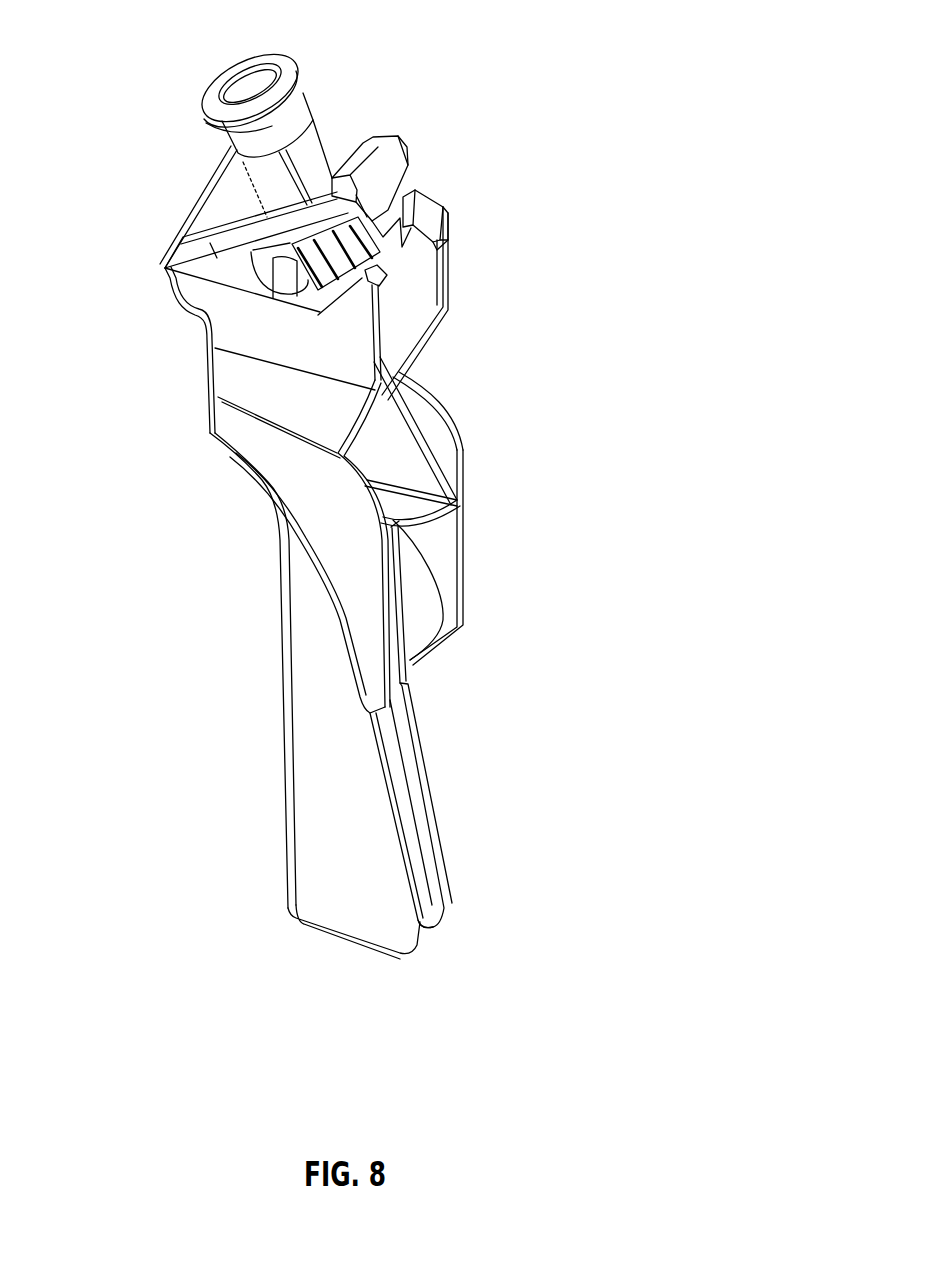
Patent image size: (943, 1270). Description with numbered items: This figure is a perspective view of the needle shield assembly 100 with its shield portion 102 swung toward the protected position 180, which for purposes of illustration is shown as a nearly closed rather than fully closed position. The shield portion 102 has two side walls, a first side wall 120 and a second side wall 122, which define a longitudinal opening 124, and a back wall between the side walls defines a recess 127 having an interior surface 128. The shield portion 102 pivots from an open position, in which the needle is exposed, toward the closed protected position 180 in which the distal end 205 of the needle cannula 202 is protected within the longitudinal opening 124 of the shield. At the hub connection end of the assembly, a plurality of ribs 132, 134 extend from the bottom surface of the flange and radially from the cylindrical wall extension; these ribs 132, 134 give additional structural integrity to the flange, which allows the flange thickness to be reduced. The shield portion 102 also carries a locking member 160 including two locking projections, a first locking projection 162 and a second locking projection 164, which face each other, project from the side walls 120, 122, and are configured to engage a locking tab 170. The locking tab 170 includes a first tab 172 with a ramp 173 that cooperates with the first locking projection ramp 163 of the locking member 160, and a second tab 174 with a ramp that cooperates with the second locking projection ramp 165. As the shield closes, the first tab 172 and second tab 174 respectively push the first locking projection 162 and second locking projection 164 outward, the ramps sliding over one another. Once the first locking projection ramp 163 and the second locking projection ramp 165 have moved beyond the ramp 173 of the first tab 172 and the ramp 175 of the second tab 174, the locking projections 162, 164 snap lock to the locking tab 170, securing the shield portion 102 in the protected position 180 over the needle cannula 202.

The needle shield assembly 100 is at (98, 93).
The shield portion 102 is at (247, 604).
The first side wall 120 is at (330, 890).
The second side wall 122 is at (445, 902).
The longitudinal opening 124 is at (408, 829).
The recess 127 is at (428, 903).
The interior surface 128 is at (423, 880).
The rib 132 is at (237, 193).
The rib 134 is at (332, 137).
The locking member 160 is at (430, 322).
The first locking projection 162 is at (423, 221).
The first locking projection ramp 163 is at (433, 216).
The second locking projection 164 is at (373, 285).
The second locking projection ramp 165 is at (367, 272).
The locking tab 170 is at (388, 170).
The first tab 172 is at (390, 138).
The ramp 173 is at (409, 168).
The second tab 174 is at (337, 200).
The ramp 175 is at (245, 212).
The protected position 180 is at (503, 603).
The needle cannula 202 is at (433, 442).
The distal end 205 is at (460, 512).